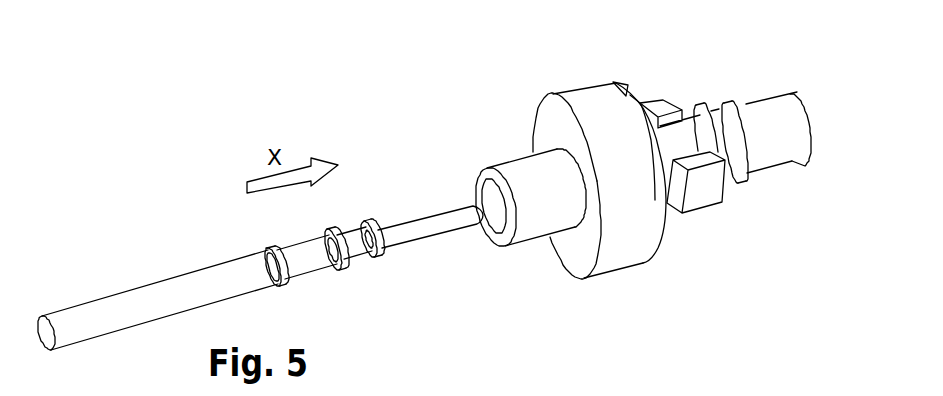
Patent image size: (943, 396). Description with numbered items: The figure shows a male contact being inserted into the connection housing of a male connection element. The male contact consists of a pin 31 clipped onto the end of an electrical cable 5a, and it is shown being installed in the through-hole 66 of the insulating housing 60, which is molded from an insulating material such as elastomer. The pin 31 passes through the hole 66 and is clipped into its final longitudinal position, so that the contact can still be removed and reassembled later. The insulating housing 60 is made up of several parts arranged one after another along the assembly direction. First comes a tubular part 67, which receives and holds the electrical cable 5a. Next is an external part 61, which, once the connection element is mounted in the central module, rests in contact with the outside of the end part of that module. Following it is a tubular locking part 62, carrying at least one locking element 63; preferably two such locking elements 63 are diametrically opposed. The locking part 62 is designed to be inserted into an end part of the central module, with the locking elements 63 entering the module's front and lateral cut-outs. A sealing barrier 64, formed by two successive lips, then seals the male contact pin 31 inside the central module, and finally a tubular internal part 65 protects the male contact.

The electrical cable 5a is at (134, 309).
The pin 31 is at (410, 231).
The connection housing 60 is at (624, 284).
The external part 61 is at (592, 103).
The locking part 62 is at (683, 121).
The locking element 63 is at (702, 190).
The sealing barrier 64 is at (730, 108).
The internal part 65 is at (776, 109).
The through-hole 66 is at (497, 225).
The tubular part 67 is at (550, 210).